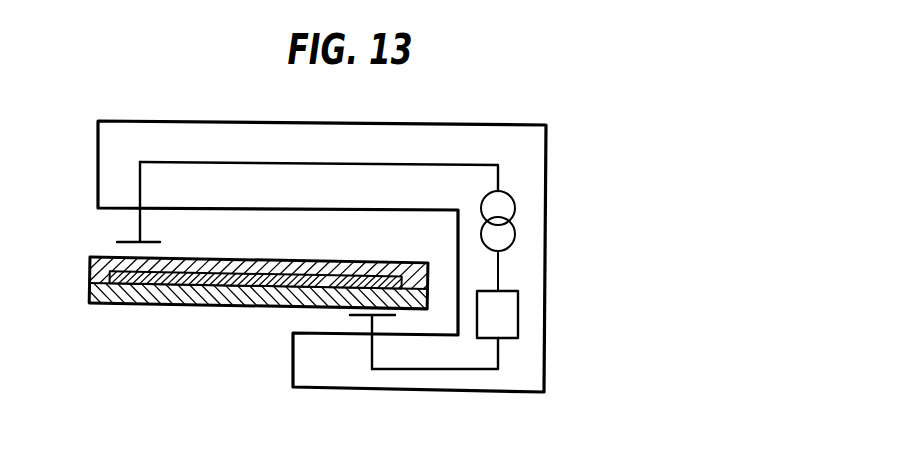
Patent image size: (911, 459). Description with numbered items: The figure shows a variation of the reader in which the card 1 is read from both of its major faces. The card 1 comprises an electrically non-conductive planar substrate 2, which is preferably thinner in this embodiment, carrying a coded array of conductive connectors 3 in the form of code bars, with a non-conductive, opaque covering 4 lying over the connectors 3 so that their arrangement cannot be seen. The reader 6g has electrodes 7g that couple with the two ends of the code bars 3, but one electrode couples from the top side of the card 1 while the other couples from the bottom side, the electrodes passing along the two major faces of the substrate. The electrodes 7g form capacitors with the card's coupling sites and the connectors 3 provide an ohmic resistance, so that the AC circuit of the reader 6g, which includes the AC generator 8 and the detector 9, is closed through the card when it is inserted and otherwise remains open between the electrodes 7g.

The card 1 is at (56, 278).
The substrate 2 is at (258, 313).
The connectors 3 is at (255, 319).
The covering 4 is at (259, 254).
The reader 6g is at (525, 150).
The electrodes 7g is at (152, 243).
The AC generator 8 is at (515, 197).
The detector 9 is at (520, 307).